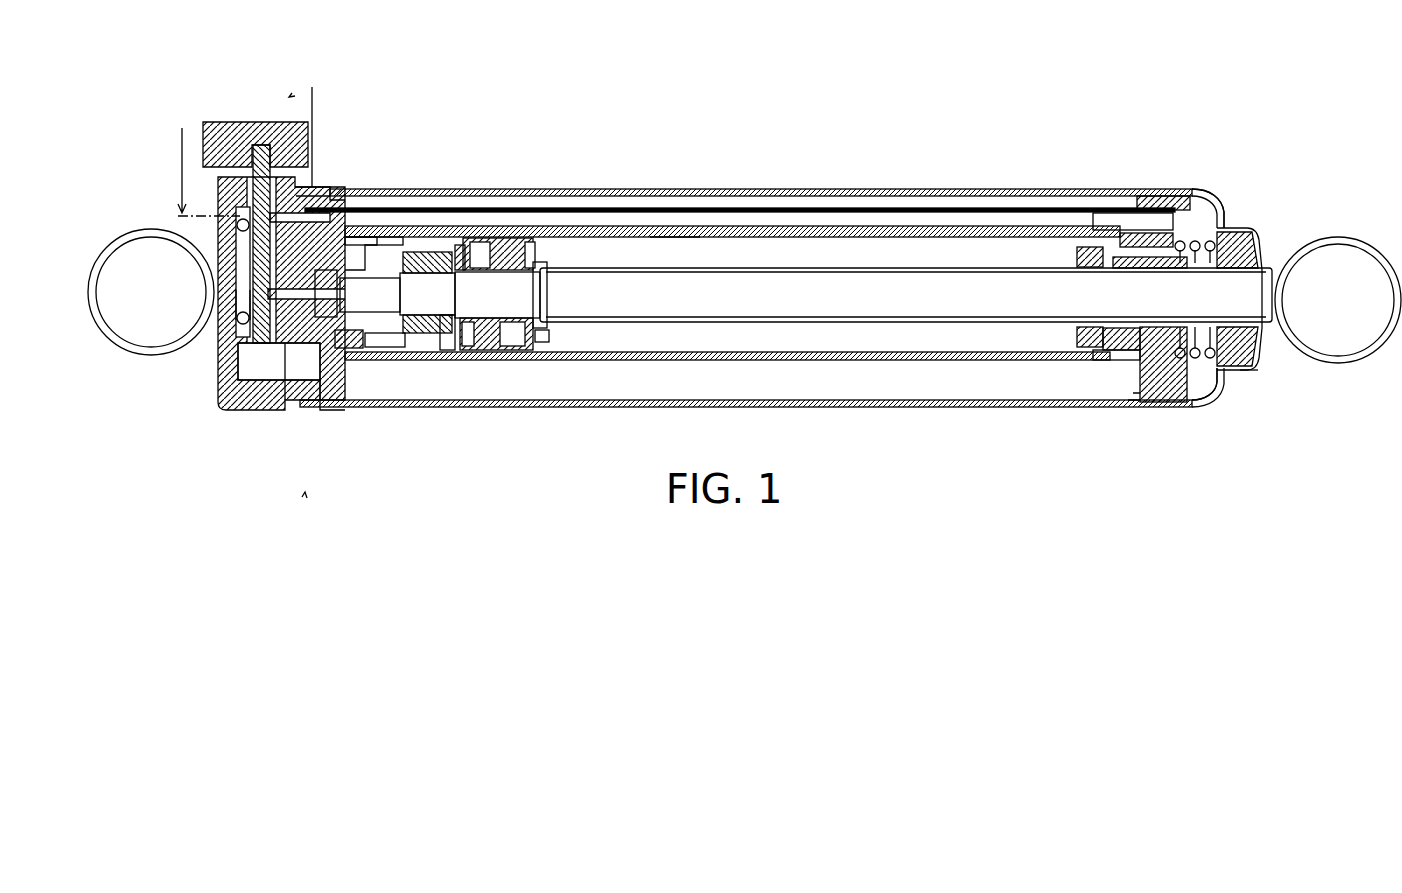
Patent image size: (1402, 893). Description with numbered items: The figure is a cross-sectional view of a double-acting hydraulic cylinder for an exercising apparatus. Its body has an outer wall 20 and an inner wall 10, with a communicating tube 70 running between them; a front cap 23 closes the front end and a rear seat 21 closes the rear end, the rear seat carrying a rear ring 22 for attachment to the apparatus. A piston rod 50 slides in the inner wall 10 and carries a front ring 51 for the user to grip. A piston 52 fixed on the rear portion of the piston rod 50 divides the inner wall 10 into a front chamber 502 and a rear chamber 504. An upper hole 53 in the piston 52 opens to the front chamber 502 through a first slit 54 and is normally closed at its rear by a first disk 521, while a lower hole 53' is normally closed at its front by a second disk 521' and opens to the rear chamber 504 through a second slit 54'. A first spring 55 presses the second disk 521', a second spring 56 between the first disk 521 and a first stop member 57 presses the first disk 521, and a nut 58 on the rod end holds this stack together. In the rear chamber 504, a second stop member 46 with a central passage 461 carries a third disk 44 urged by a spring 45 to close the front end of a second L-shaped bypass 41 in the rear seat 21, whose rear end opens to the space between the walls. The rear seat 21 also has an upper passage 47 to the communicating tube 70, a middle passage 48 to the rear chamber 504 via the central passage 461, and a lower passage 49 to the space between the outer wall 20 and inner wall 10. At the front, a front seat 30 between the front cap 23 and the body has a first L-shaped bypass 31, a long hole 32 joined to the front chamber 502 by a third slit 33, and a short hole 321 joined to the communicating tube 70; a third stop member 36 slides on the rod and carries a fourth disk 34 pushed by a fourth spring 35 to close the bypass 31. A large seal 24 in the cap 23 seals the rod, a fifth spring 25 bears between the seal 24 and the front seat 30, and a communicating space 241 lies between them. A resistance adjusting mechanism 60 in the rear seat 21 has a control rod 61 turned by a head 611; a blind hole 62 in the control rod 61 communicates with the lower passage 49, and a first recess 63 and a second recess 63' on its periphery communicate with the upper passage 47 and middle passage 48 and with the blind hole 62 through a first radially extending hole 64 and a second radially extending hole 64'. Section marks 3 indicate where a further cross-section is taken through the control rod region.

The section line 3- 3 is at (249, 139).
The inner wall 10 is at (748, 237).
The outer wall 20 is at (803, 188).
The rear seat 21 is at (290, 355).
The rear ring 22 is at (150, 232).
The front cap 23 is at (1255, 380).
The large seal 24 is at (1254, 230).
The fifth spring 25 is at (1220, 225).
The front seat 30 is at (1165, 400).
The first L-shaped bypass 31 is at (1133, 400).
The long hole 32 is at (1120, 233).
The third slit 33 is at (1094, 247).
The fourth disk 34 is at (1100, 352).
The fourth spring 35 is at (1090, 360).
The third stop member 36 is at (1073, 345).
The second L-shaped bypass 41 is at (347, 337).
The third disk 44 is at (342, 350).
The spring 45 is at (381, 237).
The second stop member 46 is at (320, 390).
The upper passage 47 is at (300, 200).
The middle passage 48 is at (338, 235).
The lower passage 49 is at (298, 380).
The piston rod 50 is at (866, 275).
The front ring 51 is at (1343, 240).
The piston 52 is at (518, 238).
The upper hole 53 is at (488, 210).
The lower hole 53' is at (528, 359).
The first slit 54 is at (540, 206).
The second slit 54' is at (490, 383).
The first spring 55 is at (560, 248).
The second spring 56 is at (463, 318).
The first stop member 57 is at (440, 334).
The nut 58 is at (428, 252).
The resistance adjusting mechanism 60 is at (290, 95).
The control rod 61 is at (258, 145).
The head 611 is at (215, 125).
The blind hole 62 is at (258, 345).
The first recess 63 is at (209, 252).
The second recess 63' is at (200, 339).
The first radially extending hole 64 is at (201, 262).
The second radially extending hole 64' is at (215, 361).
The communicating tube 70 is at (967, 208).
The communicating space 241 is at (1208, 398).
The short hole 321 is at (1200, 238).
The central passage 461 is at (372, 297).
The front chamber 502 is at (672, 245).
The rear chamber 504 is at (387, 347).
The first disk 521 is at (457, 204).
The second disk 521' is at (579, 360).